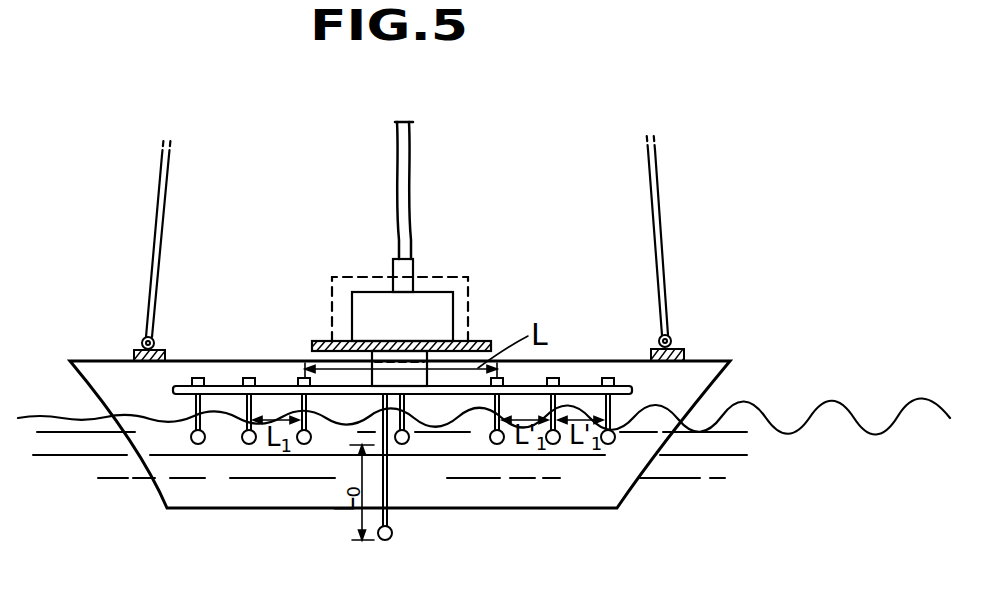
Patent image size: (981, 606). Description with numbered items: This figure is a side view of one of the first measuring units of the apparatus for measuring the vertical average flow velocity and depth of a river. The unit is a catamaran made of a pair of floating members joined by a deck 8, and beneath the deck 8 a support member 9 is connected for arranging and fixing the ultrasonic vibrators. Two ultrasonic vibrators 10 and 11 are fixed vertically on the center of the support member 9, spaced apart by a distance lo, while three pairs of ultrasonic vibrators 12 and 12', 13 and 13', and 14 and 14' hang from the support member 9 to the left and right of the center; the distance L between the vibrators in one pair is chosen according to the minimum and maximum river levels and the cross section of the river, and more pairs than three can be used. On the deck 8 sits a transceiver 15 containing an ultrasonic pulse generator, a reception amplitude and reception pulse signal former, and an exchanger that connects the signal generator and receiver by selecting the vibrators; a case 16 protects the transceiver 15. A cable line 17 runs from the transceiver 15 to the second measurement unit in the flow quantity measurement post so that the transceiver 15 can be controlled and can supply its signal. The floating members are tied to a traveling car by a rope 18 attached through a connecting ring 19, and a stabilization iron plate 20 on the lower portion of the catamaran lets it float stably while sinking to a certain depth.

The deck 8 is at (489, 338).
The support member 9 is at (633, 392).
The ultrasonic vibrator 10 is at (403, 444).
The ultrasonic vibrator 11 is at (388, 540).
The ultrasonic vibrator 12 is at (301, 475).
The ultrasonic vibrator 13 is at (244, 475).
The ultrasonic vibrator 14 is at (151, 476).
The ultrasonic vibrator 12' is at (513, 470).
The ultrasonic vibrator 13' is at (568, 473).
The ultrasonic vibrator 14' is at (631, 473).
The transceiver 15 is at (433, 302).
The case 16 is at (340, 277).
The cable line 17 is at (410, 196).
The rope 18 is at (155, 238).
The connecting ring 19 is at (134, 356).
The stabilization iron plate 20 is at (483, 496).